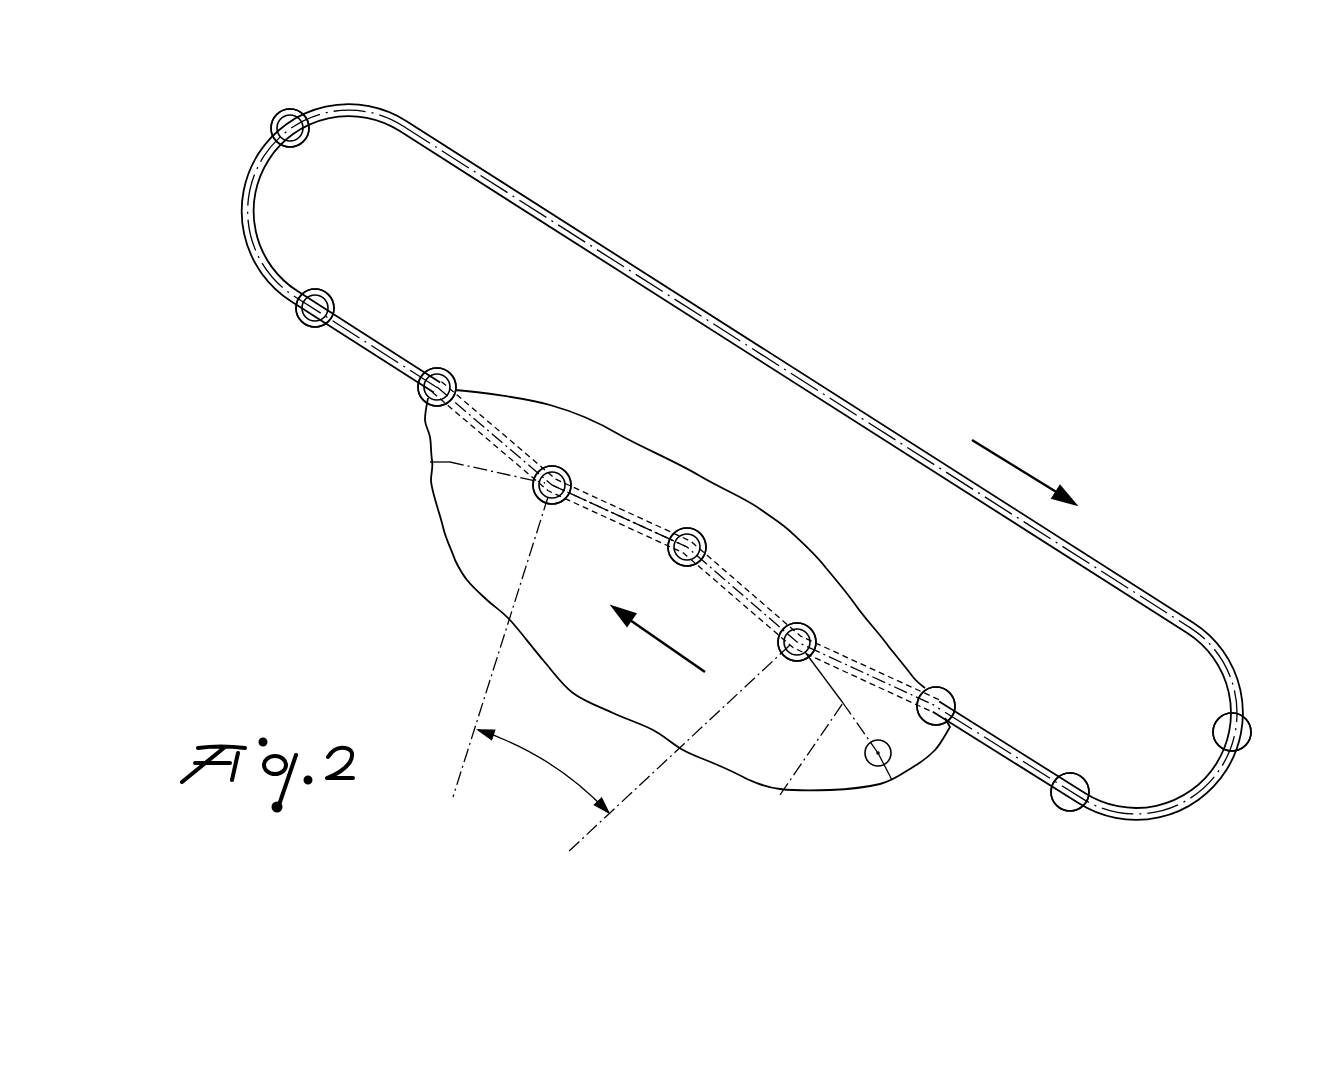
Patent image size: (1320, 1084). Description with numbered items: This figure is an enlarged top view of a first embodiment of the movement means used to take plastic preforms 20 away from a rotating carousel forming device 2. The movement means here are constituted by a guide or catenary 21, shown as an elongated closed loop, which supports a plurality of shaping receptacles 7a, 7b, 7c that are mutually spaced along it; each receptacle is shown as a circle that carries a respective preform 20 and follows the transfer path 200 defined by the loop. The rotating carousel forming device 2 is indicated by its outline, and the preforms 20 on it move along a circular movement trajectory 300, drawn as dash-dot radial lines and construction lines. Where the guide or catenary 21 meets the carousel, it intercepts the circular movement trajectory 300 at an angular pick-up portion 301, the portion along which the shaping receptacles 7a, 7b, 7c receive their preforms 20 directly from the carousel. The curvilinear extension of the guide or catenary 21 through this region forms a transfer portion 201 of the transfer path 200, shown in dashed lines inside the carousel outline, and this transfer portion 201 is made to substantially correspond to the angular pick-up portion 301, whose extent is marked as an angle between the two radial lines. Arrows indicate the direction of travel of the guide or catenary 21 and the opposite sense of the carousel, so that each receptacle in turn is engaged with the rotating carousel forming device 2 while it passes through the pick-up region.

The rotating carousel forming device 2 is at (492, 593).
The plastic preform 20 is at (271, 128).
The guide or catenary 21 is at (722, 320).
The transfer path 200 is at (246, 235).
The transfer portion 201 is at (742, 578).
The circular movement trajectory 300 is at (460, 468).
The angular pick-up portion 301 is at (618, 517).
The shaping receptacle 7a is at (448, 370).
The shaping receptacle 7b is at (332, 293).
The shaping receptacle 7c is at (296, 147).